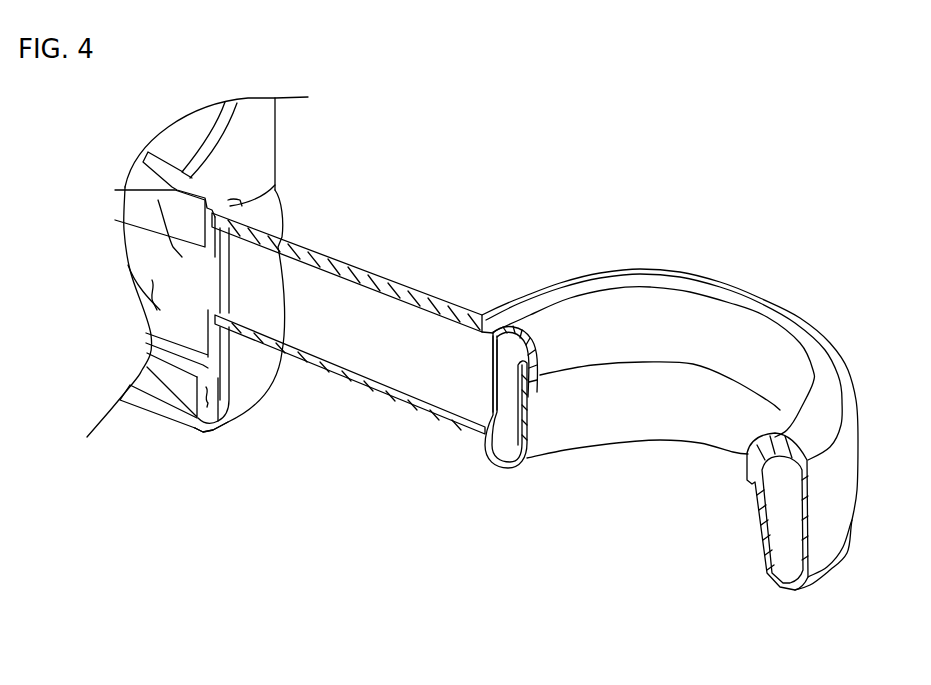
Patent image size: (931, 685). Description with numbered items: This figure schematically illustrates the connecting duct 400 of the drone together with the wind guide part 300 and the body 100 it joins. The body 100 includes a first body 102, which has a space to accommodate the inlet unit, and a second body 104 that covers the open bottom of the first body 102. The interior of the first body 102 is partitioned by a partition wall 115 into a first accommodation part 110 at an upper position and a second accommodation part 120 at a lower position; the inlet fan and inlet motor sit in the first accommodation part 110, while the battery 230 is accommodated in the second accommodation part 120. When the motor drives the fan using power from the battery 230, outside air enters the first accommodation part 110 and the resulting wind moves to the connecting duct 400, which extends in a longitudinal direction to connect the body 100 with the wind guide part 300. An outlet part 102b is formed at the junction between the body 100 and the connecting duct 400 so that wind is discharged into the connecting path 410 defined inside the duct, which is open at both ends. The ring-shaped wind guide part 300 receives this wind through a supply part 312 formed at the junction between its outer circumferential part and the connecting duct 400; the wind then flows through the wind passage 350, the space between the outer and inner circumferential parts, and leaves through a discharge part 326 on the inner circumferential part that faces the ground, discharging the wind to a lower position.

The body 100 is at (300, 109).
The first body 102 is at (253, 162).
The outlet part 102b is at (158, 196).
The first accommodation part 110 is at (157, 293).
The partition wall 115 is at (152, 340).
The battery 230 is at (150, 380).
The second body 104 is at (150, 408).
The second accommodation part 120 is at (195, 418).
The connecting duct 400 is at (380, 240).
The connecting path 410 is at (382, 342).
The wind guide part 300 is at (720, 245).
The wind passage 350 is at (507, 385).
The supply part 312 is at (490, 388).
The discharge part 326 is at (541, 374).